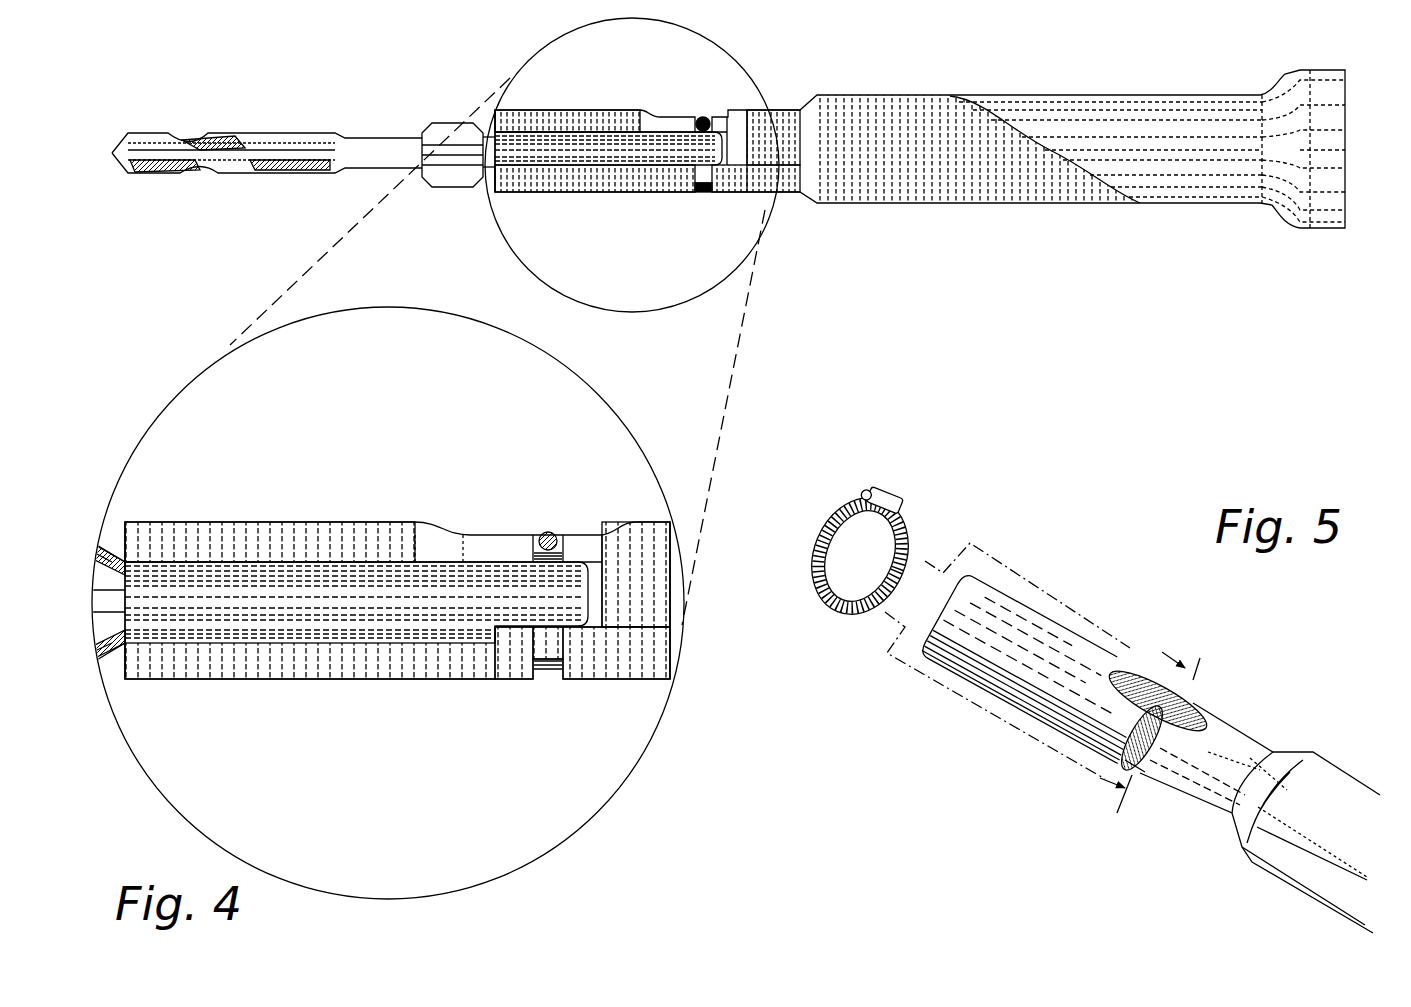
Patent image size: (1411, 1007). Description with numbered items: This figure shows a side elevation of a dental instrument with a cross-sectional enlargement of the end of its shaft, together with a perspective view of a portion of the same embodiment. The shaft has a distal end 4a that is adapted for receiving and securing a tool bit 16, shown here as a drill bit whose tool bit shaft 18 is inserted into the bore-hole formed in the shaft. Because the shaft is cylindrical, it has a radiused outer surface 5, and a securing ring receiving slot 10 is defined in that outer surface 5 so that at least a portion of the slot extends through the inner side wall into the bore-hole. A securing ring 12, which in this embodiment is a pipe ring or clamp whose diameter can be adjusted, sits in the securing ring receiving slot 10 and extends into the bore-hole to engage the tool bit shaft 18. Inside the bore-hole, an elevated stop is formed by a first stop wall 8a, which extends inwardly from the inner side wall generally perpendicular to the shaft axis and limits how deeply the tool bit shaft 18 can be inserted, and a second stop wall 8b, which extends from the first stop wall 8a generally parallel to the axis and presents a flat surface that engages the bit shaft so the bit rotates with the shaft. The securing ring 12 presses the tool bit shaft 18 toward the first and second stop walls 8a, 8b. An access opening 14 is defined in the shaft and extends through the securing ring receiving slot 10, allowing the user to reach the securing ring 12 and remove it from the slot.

In FIG. 4, the distal end 4a is at (495, 198).
In FIG. 5, the distal end 4a is at (799, 682).
In FIG. 4, the outer surface 5 is at (338, 522).
In FIG. 5, the outer surface 5 is at (1066, 673).
In FIG. 4, the first stop wall 8a is at (488, 643).
In FIG. 4, the second stop wall 8b is at (630, 618).
In FIG. 4, the securing ring receiving slot 10 is at (700, 193).
In FIG. 5, the securing ring receiving slot 10 is at (1140, 773).
In FIG. 4, the securing ring 12 is at (703, 112).
In FIG. 5, the securing ring 12 is at (870, 495).
In FIG. 4, the access opening 14 is at (645, 522).
In FIG. 5, the access opening 14 is at (1217, 710).
In FIG. 4, the tool bit 16 is at (272, 132).
In FIG. 4, the tool bit shaft 18 is at (513, 147).